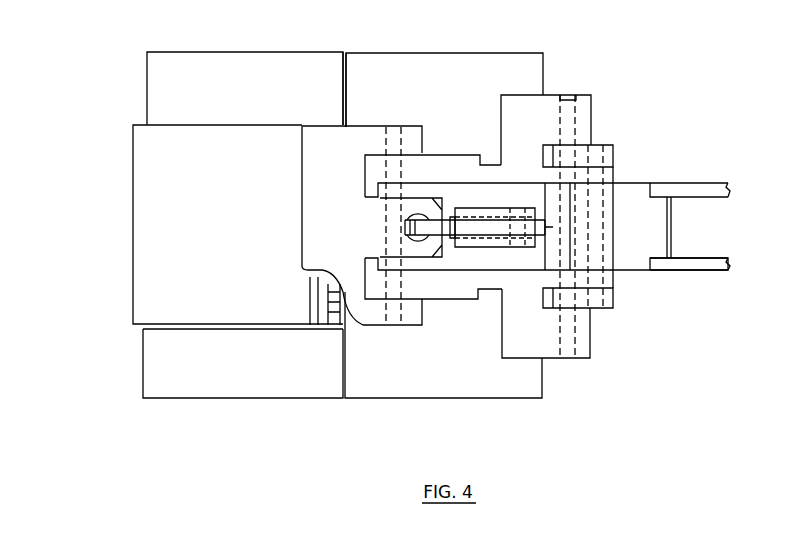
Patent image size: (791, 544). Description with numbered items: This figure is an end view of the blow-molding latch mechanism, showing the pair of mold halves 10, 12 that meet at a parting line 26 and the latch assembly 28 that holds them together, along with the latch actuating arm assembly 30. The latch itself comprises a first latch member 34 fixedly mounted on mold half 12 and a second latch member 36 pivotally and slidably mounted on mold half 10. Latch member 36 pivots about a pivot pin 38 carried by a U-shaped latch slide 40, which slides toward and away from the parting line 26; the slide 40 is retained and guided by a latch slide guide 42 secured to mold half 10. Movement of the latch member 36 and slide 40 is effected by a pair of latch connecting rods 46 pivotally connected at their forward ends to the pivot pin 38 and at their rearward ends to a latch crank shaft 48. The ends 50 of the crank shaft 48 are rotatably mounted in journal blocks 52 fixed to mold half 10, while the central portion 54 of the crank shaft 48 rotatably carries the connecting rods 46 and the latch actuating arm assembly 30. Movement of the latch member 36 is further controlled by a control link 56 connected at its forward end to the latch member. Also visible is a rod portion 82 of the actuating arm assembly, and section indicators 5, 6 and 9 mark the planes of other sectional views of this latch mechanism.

The section line 9- 9 is at (121, 15).
The mold half 12 is at (217, 88).
The parting line 26 is at (344, 68).
The mold half 10 is at (398, 83).
The first latch member 34 is at (188, 172).
The second latch member 36 is at (326, 172).
The latch assembly 28 is at (453, 338).
The latch connecting rods 46 is at (492, 168).
The journal blocks 52 is at (591, 100).
The latch crank shaft 48 is at (617, 157).
The central portion of crank shaft 54 is at (608, 260).
The ends of crank shaft 50 is at (571, 97).
The latch actuating arm assembly 30 is at (691, 182).
The lower rod flange 82 is at (727, 262).
The pivot pin 38 is at (386, 127).
The latch slide 40 is at (415, 197).
The latch slide guide 42 is at (450, 216).
The control link 56 is at (447, 232).
The section line 5- 5 is at (405, 227).
The section line 6- 6 is at (503, 258).